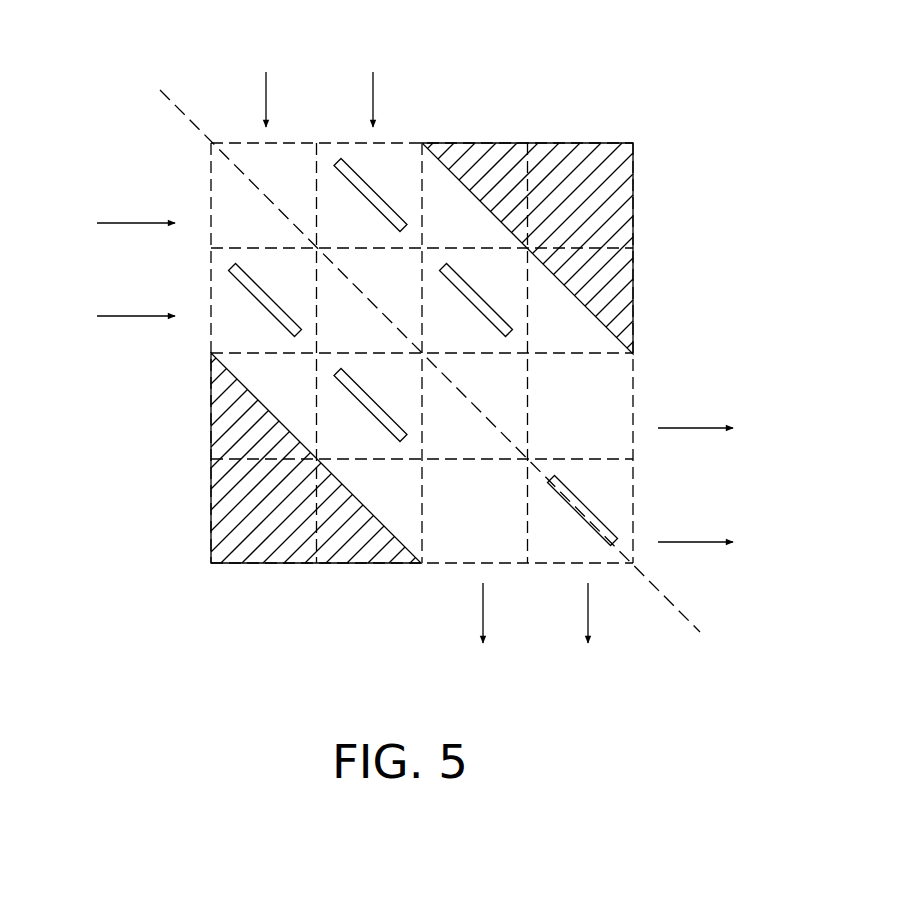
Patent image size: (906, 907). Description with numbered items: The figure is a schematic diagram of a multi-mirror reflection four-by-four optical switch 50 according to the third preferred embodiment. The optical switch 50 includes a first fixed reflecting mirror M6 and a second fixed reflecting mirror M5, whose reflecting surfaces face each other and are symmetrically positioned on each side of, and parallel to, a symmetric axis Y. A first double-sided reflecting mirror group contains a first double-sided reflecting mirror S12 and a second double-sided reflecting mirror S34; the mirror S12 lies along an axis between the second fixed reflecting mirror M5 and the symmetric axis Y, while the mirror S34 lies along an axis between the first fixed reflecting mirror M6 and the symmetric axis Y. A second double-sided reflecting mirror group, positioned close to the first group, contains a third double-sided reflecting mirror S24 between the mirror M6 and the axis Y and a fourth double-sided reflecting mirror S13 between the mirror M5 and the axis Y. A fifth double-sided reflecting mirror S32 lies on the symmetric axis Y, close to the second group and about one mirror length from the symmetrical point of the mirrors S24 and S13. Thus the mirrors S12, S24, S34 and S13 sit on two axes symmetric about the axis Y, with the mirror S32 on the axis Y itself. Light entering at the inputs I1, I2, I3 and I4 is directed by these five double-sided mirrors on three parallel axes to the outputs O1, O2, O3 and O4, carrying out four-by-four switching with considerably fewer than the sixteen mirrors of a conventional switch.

The optical switch 50 is at (683, 150).
The second fixed reflecting mirror M5 is at (214, 505).
The first fixed reflecting mirror M6 is at (630, 212).
The first double-sided reflecting mirror S12 is at (265, 306).
The fourth double-sided reflecting mirror S13 is at (370, 411).
The third double-sided reflecting mirror S24 is at (476, 306).
The fifth double-sided reflecting mirror S32 is at (587, 509).
The second double-sided reflecting mirror S34 is at (370, 202).
The input port I1 is at (265, 79).
The input port I2 is at (117, 318).
The input port I3 is at (375, 79).
The input port I4 is at (117, 223).
The output port O1 is at (717, 430).
The output port O2 is at (597, 634).
The output port O3 is at (717, 545).
The output port O4 is at (492, 634).
The symmetric axis Y is at (133, 87).